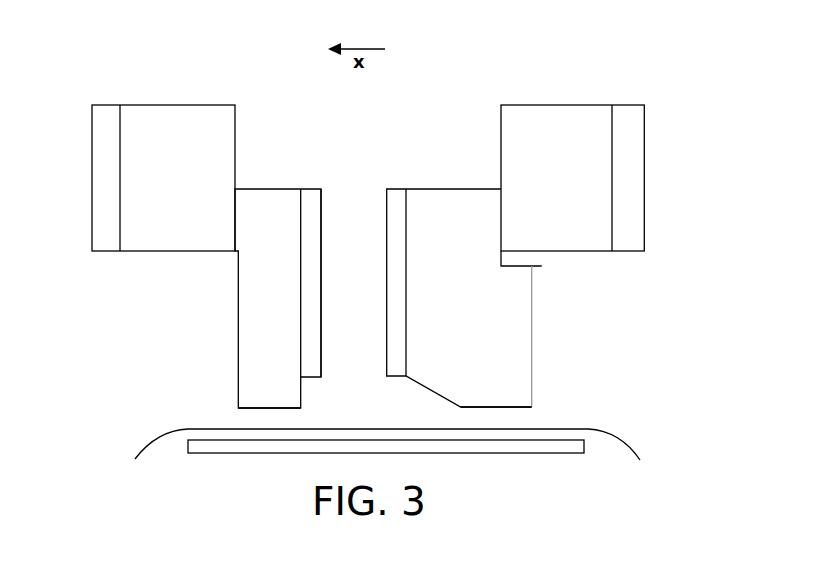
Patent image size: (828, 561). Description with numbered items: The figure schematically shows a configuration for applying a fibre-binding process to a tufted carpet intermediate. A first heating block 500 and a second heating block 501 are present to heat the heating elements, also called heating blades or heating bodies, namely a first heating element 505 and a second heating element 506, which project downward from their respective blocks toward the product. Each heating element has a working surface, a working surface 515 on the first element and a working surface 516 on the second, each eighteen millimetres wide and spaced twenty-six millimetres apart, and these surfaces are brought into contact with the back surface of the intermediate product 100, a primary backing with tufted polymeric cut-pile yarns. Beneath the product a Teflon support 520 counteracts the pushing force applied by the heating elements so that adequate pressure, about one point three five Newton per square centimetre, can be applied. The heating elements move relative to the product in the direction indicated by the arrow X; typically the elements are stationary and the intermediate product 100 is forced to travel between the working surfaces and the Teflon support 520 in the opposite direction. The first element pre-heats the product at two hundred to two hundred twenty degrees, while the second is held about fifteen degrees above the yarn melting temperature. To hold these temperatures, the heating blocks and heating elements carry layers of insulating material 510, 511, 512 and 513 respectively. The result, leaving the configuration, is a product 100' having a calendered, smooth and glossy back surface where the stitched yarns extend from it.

The first heating block 500 is at (147, 105).
The second heating block 501 is at (557, 105).
The first heating element 505 is at (250, 189).
The second heating element 506 is at (492, 189).
The layer of insulating material 510 is at (90, 213).
The layer of insulating material 511 is at (644, 220).
The layer of insulating material 512 is at (323, 211).
The layer of insulating material 513 is at (387, 338).
The working surface 515 is at (270, 409).
The working surface 516 is at (515, 407).
The intermediate product 100 is at (440, 423).
The product having a calendered back surface 100' is at (128, 425).
The Teflon support 520 is at (533, 454).